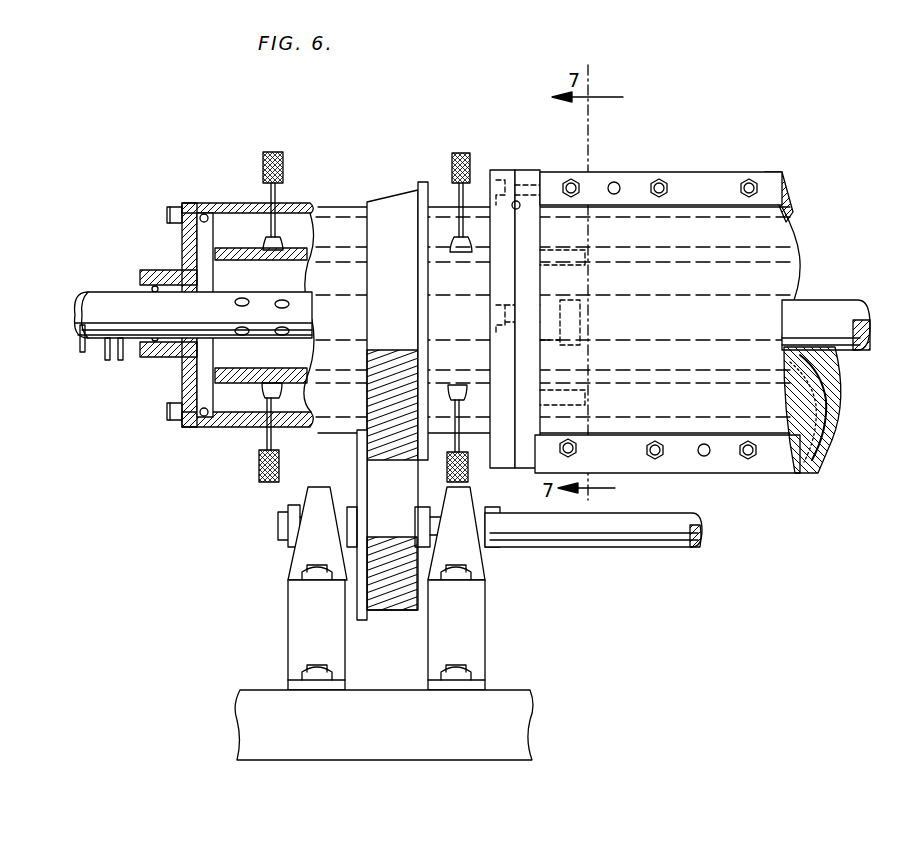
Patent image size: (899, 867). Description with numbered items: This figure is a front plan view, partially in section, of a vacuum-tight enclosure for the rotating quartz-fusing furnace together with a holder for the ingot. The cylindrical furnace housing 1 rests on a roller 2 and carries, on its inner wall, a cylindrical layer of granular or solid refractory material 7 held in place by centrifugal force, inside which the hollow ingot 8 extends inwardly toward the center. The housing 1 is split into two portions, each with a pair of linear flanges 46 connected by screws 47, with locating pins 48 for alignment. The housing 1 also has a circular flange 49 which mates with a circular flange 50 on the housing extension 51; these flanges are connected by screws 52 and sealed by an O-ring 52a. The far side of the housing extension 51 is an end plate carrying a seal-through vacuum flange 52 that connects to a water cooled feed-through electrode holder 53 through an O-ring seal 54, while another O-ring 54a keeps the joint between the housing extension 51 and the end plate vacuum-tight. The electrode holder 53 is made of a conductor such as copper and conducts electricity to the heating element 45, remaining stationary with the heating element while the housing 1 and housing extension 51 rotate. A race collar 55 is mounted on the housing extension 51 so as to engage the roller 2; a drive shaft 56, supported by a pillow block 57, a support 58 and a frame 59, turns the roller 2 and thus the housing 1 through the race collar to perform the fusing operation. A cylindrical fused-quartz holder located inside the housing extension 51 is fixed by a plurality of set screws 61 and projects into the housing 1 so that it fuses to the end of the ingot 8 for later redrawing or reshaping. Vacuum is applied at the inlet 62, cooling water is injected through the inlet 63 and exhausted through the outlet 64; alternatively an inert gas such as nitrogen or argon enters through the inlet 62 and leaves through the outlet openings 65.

The cylindrical furnace housing 1 is at (797, 277).
The cylindrical roller 2 is at (386, 598).
The refractory material layer 7 is at (822, 400).
The hollow ingot 8 is at (770, 272).
The heating element 45 is at (838, 300).
The linear flange 46 is at (706, 180).
The screw 47 is at (576, 181).
The locating pin 48 is at (614, 182).
The circular flange 49 is at (528, 170).
The circular flange 50 is at (496, 170).
The housing extension 51 is at (305, 205).
The seal-through vacuum flange 52 is at (157, 270).
The O-ring 52a is at (521, 203).
The feed-through electrode holder 53 is at (122, 298).
The O-ring seal 54 is at (155, 358).
The O-ring 54a is at (203, 214).
The race collar 55 is at (396, 200).
The drive shaft 56 is at (665, 535).
The pillow block 57 is at (306, 560).
The support 58 is at (310, 619).
The frame 59 is at (520, 715).
The set screw 61 is at (283, 160).
The inlet 62 is at (83, 353).
The inlet 63 is at (107, 361).
The outlet 64 is at (121, 361).
The outlet openings 65 is at (236, 331).